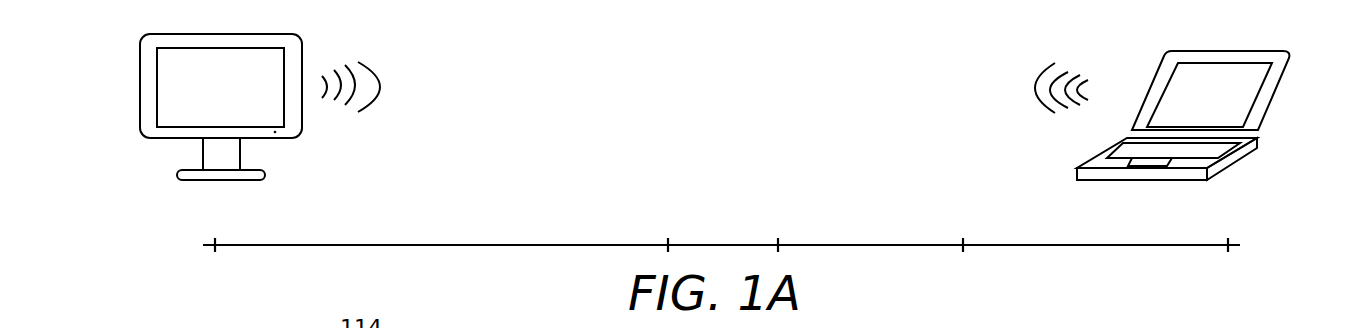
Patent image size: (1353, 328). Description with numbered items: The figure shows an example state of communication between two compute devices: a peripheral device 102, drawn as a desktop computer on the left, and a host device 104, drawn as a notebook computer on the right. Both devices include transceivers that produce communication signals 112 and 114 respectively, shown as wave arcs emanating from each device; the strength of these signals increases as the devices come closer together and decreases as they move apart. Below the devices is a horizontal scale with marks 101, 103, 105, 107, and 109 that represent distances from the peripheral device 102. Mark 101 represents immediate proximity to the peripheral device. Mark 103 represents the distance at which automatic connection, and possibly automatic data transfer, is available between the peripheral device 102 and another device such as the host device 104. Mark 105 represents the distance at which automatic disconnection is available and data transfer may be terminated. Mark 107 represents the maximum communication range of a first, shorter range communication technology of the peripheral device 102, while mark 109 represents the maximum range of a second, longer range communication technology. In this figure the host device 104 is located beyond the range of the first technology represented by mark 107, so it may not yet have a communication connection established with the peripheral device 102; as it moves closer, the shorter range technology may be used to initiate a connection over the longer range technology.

The mark 101 is at (230, 232).
The peripheral device 102 is at (147, 138).
The mark 103 is at (653, 232).
The host device 104 is at (1262, 121).
The mark 105 is at (788, 232).
The mark 107 is at (972, 232).
The mark 109 is at (1218, 232).
The communication signals 112 is at (395, 100).
The communication signals 114 is at (1017, 105).